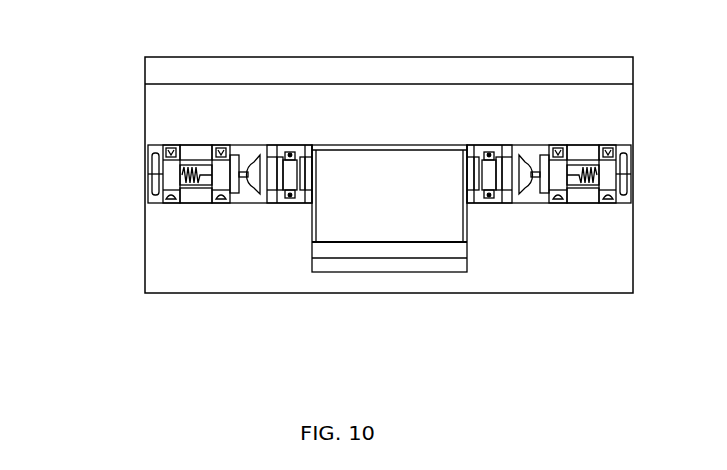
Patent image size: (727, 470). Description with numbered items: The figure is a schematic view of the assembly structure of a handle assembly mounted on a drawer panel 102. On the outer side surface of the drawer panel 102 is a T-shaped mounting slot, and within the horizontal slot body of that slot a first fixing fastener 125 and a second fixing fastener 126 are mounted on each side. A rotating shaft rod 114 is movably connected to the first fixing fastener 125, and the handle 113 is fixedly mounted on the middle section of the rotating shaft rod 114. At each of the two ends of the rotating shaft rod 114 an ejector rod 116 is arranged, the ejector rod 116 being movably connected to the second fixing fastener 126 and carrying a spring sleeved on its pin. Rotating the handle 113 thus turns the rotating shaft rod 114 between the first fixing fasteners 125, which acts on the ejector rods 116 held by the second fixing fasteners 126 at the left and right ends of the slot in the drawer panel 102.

The drawer panel 102 is at (162, 98).
The handle 113 is at (374, 225).
The rotating shaft rod 114 is at (303, 173).
The ejector rod 116 is at (203, 177).
The first fixing fastener 125 is at (292, 150).
The second fixing fastener 126 is at (216, 148).